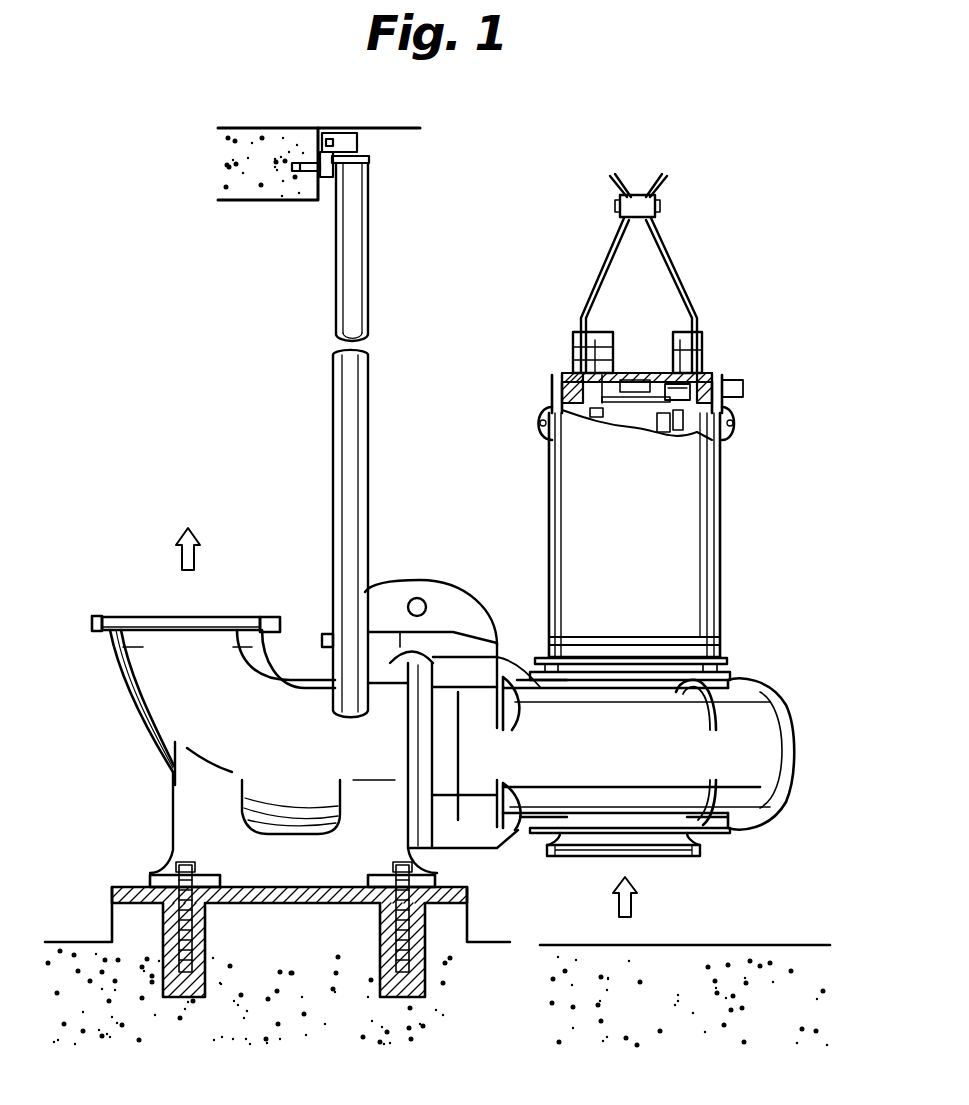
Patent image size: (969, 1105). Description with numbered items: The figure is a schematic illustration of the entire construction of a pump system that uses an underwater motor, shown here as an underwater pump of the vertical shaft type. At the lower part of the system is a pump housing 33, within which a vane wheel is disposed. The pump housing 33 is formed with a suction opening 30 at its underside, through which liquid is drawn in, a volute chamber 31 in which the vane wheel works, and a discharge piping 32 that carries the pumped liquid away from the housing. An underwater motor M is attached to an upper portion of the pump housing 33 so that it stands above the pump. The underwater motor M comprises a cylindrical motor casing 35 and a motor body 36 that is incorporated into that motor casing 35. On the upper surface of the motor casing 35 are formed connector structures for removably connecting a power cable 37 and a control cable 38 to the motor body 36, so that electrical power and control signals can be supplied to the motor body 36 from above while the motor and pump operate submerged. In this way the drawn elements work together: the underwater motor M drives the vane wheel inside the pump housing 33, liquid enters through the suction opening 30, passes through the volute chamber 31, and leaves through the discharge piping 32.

The suction opening 30 is at (663, 857).
The volute chamber 31 is at (758, 710).
The discharge piping 32 is at (167, 720).
The pump housing 33 is at (477, 800).
The motor casing 35 is at (720, 388).
The motor body 36 is at (675, 400).
The power cable 37 is at (592, 305).
The control cable 38 is at (690, 310).
The underwater motor M is at (722, 543).